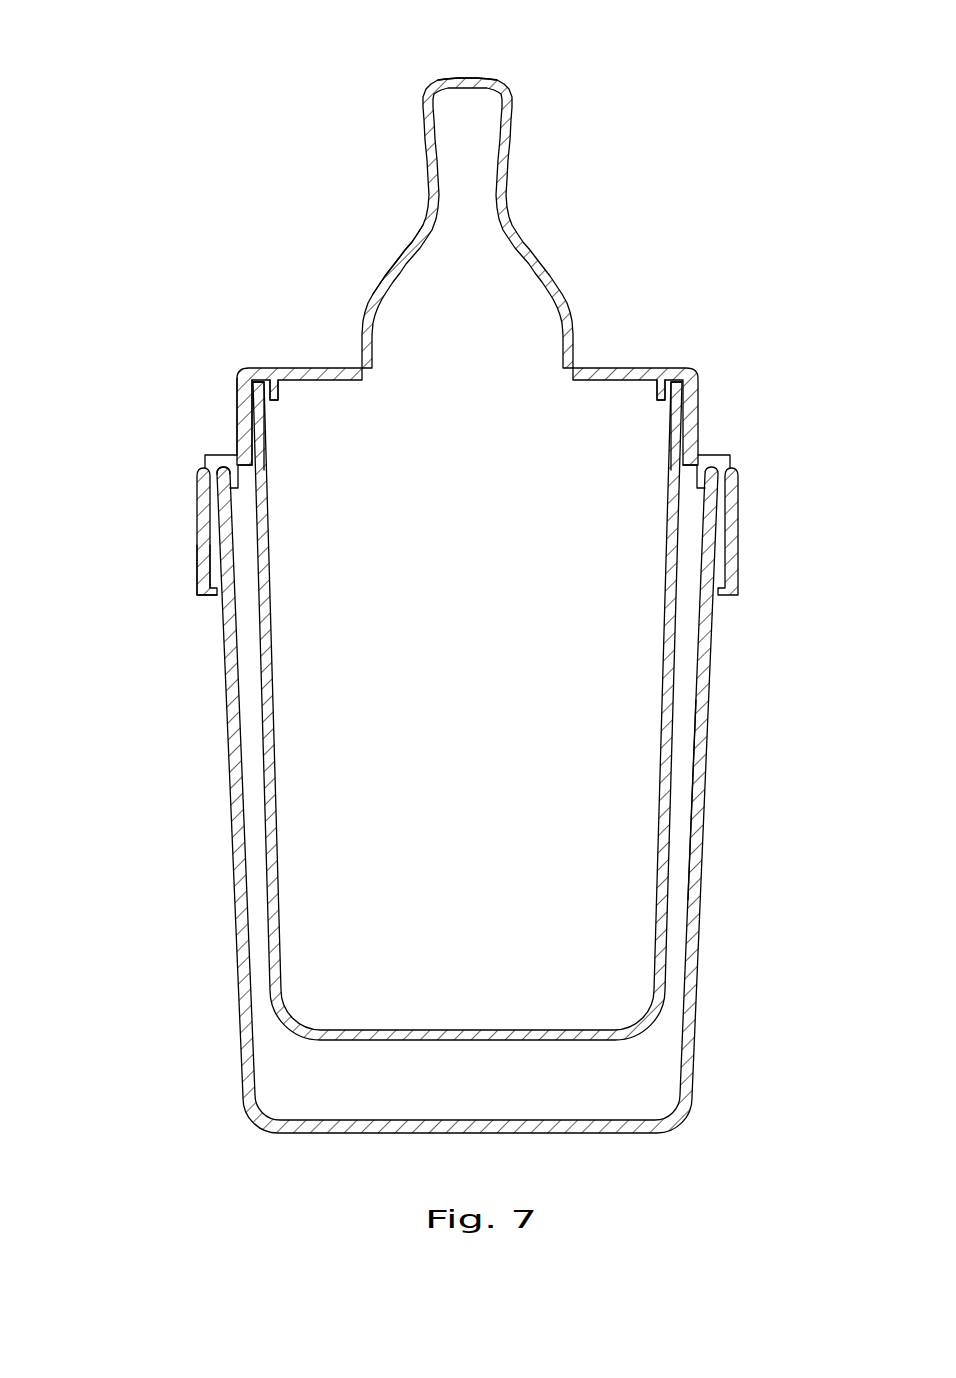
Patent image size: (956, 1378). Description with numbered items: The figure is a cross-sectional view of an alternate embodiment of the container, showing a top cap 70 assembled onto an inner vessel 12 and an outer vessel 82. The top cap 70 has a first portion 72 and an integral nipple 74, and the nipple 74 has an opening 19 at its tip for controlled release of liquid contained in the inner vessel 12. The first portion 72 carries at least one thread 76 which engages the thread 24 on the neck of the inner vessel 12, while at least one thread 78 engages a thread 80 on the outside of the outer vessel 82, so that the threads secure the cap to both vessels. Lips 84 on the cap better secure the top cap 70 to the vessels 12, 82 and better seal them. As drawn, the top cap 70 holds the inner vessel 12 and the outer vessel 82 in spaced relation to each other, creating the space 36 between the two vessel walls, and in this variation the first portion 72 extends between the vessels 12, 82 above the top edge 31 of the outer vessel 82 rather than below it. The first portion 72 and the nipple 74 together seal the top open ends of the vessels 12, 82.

The inner vessel 12 is at (275, 792).
The opening 19 is at (470, 78).
The thread 24 is at (257, 419).
The top edge 31 is at (222, 458).
The space 36 is at (682, 848).
The top cap 70 is at (240, 348).
The first portion 72 is at (232, 457).
The nipple 74 is at (410, 240).
The thread 76 is at (245, 437).
The thread 78 is at (213, 547).
The thread 80 is at (213, 527).
The outer vessel 82 is at (693, 932).
The lips 84 is at (235, 478).